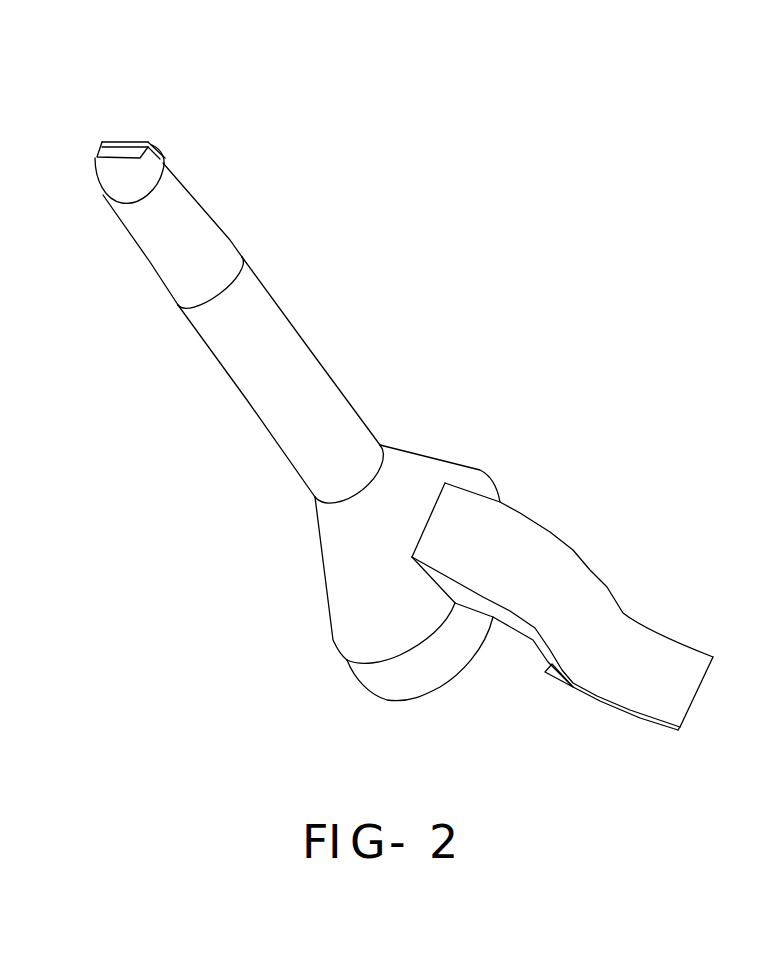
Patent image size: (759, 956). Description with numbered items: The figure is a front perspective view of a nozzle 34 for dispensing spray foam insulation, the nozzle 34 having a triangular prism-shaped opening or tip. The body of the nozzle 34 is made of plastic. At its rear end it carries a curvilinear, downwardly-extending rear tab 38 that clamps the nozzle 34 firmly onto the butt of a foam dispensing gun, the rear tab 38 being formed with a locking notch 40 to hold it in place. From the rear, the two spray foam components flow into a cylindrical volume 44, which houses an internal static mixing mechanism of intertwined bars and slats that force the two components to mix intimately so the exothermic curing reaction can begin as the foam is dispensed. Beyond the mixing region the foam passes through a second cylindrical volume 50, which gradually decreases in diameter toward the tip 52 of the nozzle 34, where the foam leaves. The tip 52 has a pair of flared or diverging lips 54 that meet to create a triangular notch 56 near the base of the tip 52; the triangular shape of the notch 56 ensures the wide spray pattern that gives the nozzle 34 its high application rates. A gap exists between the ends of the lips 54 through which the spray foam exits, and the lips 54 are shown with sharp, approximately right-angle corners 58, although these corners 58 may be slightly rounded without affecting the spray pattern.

The nozzle 34 is at (345, 276).
The rear tab 38 is at (582, 588).
The locking notch 40 is at (552, 688).
The cylindrical volume 44 is at (320, 406).
The second cylindrical volume 50 is at (197, 232).
The tip 52 is at (123, 182).
The lips 54 is at (95, 160).
The triangular notch 56 is at (162, 158).
The corners 58 is at (130, 142).